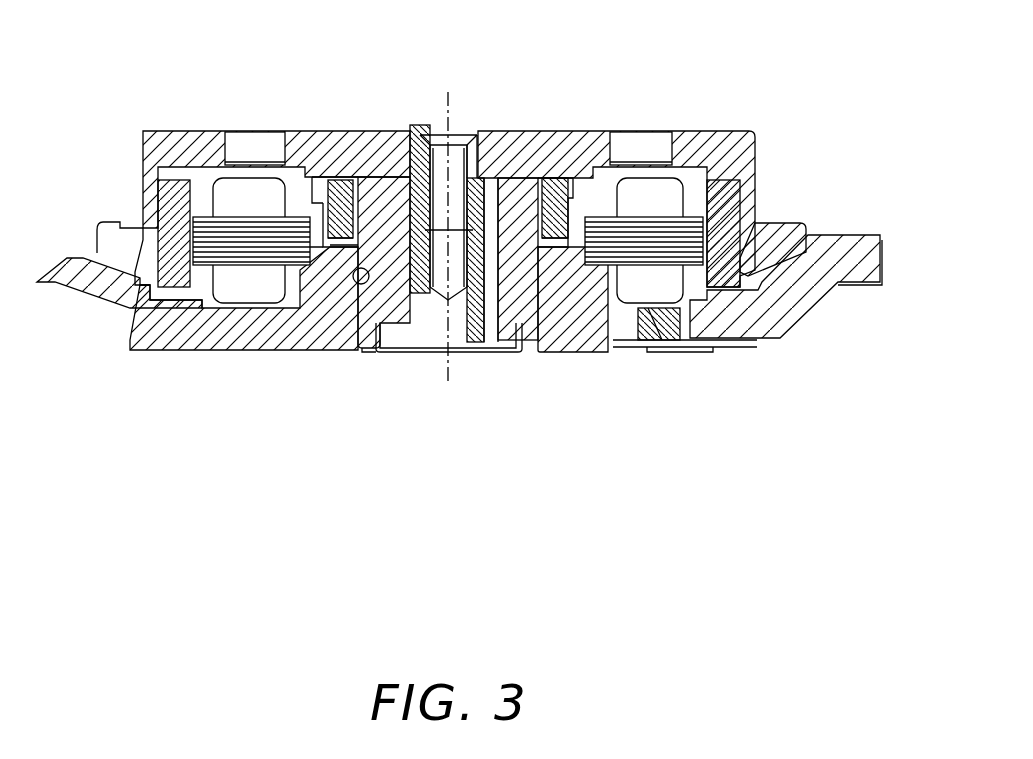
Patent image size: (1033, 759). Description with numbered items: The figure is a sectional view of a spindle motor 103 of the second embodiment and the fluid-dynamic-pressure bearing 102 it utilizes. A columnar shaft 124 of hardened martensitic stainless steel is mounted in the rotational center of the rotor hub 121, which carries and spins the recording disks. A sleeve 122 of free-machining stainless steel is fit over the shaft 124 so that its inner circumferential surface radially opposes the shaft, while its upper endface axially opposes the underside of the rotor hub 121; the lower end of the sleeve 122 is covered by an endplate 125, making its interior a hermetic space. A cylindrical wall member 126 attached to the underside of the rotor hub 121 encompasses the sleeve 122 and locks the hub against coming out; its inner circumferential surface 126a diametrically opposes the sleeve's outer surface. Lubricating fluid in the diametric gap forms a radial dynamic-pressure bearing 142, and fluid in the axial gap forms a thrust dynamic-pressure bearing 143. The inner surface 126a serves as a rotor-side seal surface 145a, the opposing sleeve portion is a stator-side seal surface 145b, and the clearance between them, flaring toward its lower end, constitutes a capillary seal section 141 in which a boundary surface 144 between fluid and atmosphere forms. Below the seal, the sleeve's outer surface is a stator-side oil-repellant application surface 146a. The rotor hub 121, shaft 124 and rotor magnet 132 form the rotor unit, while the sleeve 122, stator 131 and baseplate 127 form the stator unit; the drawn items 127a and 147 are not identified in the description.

The fluid-dynamic-pressure bearing 102 is at (365, 370).
The spindle motor 103 is at (645, 122).
The rotor hub 121 is at (734, 236).
The sleeve 122 is at (530, 287).
The shaft 124 is at (465, 320).
The endplate 125 is at (490, 355).
The cylindrical wall member 126 is at (563, 180).
The inner circumferential surface 126a is at (505, 230).
The baseplate 127 is at (716, 323).
The terminal portion 127a is at (358, 280).
The stator 131 is at (750, 270).
The rotor magnet 132 is at (738, 250).
The capillary seal section 141 is at (362, 245).
The radial dynamic-pressure bearing 142 is at (414, 178).
The thrust dynamic-pressure bearing 143 is at (398, 178).
The boundary surface 144 is at (545, 215).
The rotor-side seal surface 145a is at (325, 190).
The stator-side seal surface 145b is at (310, 200).
The stator-side oil-repellant application surface 146a is at (322, 250).
The pin 147 is at (358, 300).